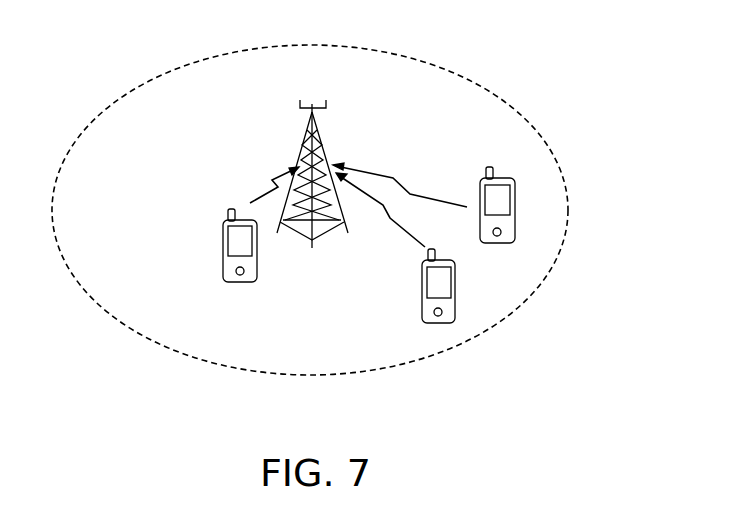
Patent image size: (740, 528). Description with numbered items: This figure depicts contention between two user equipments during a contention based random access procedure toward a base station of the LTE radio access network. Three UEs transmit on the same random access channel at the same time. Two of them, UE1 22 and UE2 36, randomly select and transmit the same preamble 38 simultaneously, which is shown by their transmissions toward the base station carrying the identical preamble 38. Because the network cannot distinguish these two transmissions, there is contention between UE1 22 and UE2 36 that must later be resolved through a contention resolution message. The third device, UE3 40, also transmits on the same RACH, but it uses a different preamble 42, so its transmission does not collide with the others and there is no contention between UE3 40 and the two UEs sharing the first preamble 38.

The UE1 22 is at (455, 313).
The UE2 36 is at (514, 205).
The UE3 40 is at (257, 267).
The preamble p1 42 is at (222, 170).
The preamble p5 38 is at (412, 146).